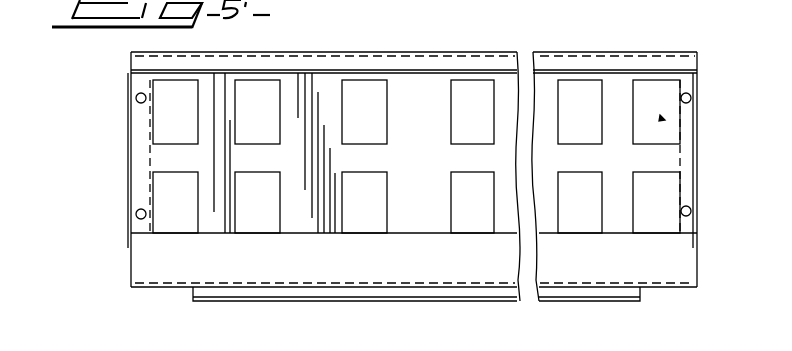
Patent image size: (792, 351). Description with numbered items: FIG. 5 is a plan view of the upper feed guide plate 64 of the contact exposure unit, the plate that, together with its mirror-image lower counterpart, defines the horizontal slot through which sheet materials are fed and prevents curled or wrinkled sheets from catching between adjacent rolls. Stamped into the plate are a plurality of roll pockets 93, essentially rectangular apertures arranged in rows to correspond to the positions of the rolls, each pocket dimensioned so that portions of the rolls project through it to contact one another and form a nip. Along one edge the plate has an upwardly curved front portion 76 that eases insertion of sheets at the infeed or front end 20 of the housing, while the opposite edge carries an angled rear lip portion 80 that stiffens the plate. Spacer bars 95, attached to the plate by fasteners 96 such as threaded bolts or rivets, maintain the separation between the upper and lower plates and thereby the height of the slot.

The upper feed guide plate 64 is at (127, 75).
The rear lip portion 80 is at (565, 62).
The roll pockets 93 is at (235, 100).
The spacer bars 95 is at (138, 130).
The fasteners 96 is at (136, 97).
The upwardly curved front portion 76 is at (347, 268).
The front end 20 is at (395, 301).